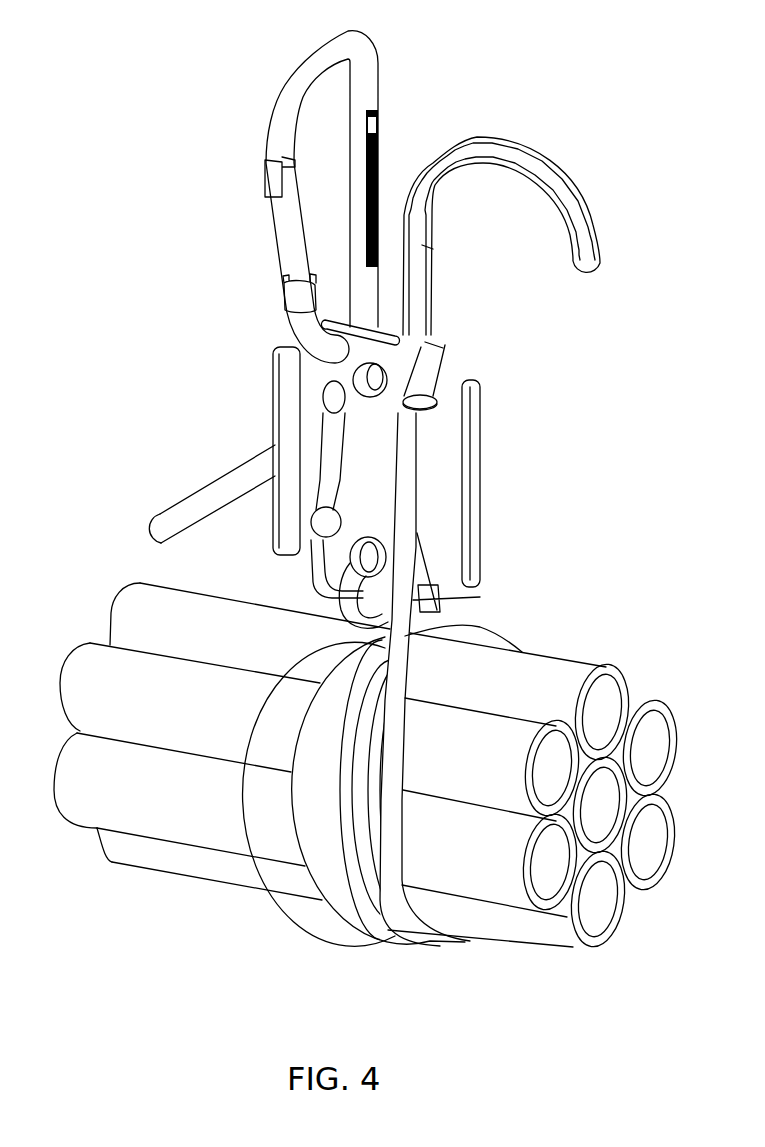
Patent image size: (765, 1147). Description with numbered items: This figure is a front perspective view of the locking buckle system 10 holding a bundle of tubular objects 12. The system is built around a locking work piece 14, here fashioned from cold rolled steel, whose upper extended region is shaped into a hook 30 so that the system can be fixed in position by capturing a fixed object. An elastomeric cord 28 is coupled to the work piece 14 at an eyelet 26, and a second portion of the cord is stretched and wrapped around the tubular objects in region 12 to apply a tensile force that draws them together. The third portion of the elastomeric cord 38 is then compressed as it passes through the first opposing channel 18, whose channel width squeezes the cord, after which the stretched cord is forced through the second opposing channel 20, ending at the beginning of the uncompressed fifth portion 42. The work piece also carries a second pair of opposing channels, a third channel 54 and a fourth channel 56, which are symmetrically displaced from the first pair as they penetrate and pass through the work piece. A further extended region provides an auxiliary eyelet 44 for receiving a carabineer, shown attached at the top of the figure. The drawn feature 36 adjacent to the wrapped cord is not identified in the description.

The locking buckle system 10 is at (463, 205).
The bundle of objects 12 is at (382, 799).
The locking work piece 14 is at (382, 415).
The first opposing channel 18 is at (471, 349).
The second opposing channel 20 is at (309, 584).
The eyelet 26 is at (442, 531).
The elastomeric cord 28 is at (160, 483).
The hook 30 is at (533, 201).
The strap band 36 is at (360, 698).
The third portion of the elastomeric cord 38 is at (482, 483).
The uncompressed fifth portion 42 is at (105, 512).
The auxiliary eyelet 44 is at (269, 459).
The third channel 54 is at (245, 421).
The fourth channel 56 is at (458, 578).